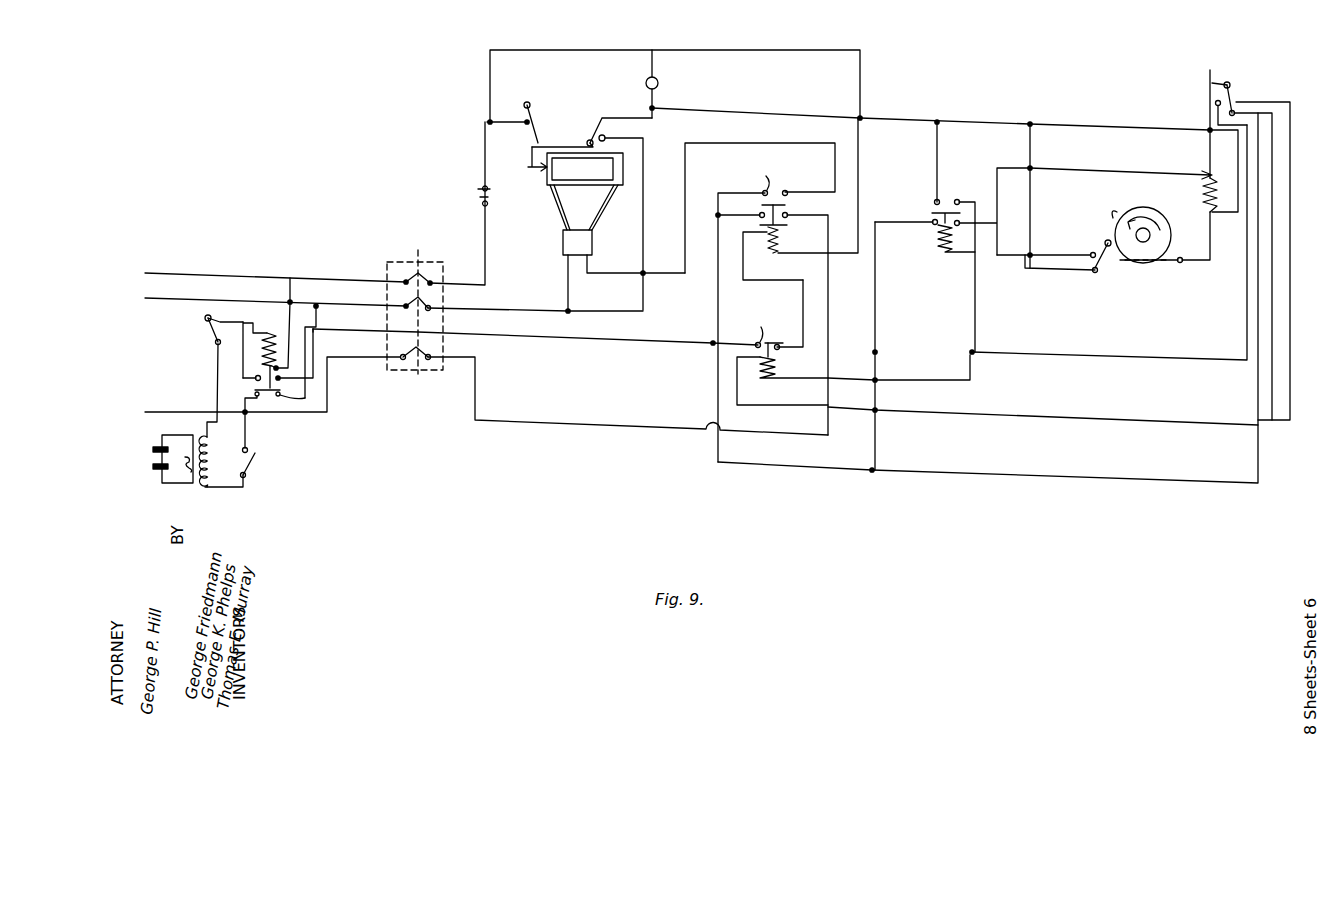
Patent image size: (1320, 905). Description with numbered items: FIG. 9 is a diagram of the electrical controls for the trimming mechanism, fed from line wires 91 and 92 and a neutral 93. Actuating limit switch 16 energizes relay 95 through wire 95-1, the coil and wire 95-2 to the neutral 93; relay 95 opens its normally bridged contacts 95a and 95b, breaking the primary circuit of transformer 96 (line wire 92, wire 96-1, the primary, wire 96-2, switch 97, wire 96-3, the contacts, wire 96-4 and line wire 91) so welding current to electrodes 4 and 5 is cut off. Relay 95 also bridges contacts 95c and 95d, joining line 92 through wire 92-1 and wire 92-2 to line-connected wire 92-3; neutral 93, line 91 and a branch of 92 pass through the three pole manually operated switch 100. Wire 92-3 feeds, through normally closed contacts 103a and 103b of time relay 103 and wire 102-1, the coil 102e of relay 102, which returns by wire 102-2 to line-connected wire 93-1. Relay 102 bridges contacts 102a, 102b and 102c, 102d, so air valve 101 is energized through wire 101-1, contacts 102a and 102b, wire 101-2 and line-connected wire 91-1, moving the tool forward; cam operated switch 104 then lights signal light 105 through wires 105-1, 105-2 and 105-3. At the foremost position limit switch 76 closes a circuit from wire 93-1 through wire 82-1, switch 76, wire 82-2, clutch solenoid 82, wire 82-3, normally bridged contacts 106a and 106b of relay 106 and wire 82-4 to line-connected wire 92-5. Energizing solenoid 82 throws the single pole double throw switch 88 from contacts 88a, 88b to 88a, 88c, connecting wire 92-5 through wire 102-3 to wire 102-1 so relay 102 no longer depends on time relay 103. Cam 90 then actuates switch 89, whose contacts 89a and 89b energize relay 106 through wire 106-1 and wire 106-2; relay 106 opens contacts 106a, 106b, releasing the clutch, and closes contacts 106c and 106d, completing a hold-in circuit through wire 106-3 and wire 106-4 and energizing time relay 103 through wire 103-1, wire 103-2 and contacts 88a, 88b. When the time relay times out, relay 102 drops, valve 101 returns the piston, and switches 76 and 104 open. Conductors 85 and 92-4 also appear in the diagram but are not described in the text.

The electrode 4 is at (152, 466).
The electrode 5 is at (152, 449).
The limit switch 16 is at (205, 318).
The limit switch 76 is at (534, 105).
The clutch solenoid 82 is at (1206, 212).
The wire 82-1 is at (505, 121).
The wire 82-2 is at (904, 121).
The wire 82-3 is at (1105, 174).
The wire 82-4 is at (877, 328).
The conductor 85 is at (1208, 152).
The single pole double throw switch 88 is at (1220, 90).
The contact 88a is at (1236, 111).
The contact 88b is at (1238, 100).
The contact 88c is at (1216, 106).
The switch 89 is at (1105, 255).
The contact 89a is at (1094, 274).
The contact 89b is at (1090, 252).
The cam 90 is at (1120, 210).
The line wire 91 is at (160, 299).
The line connected wire 91-1 is at (566, 290).
The line wire 92 is at (157, 411).
The wire 92-1 is at (217, 345).
The wire 92-2 is at (310, 350).
The line connected wire 92-3 is at (580, 334).
The conductor 92-4 is at (574, 418).
The line-connected wire 92-5 is at (832, 467).
The neutral 93 is at (158, 273).
The line-connected wire 93-1 is at (484, 142).
The relay 95 is at (261, 361).
The wire 95-1 is at (246, 308).
The wire 95-2 is at (294, 282).
The contact 95a is at (259, 398).
The contact 95b is at (290, 400).
The contact 95c is at (256, 380).
The contact 95d is at (300, 383).
The transformer 96 is at (194, 470).
The wire 96-1 is at (216, 425).
The wire 96-2 is at (227, 488).
The wire 96-3 is at (248, 441).
The wire 96-4 is at (318, 318).
The switch 97 is at (255, 462).
The three pole manually operated switch 100 is at (418, 262).
The valve 101 is at (563, 242).
The wire 101-1 is at (718, 312).
The wire 101-2 is at (800, 142).
The relay 102 is at (773, 242).
The wire 102-1 is at (796, 286).
The wire 102-2 is at (860, 163).
The wire 102-3 is at (1125, 356).
The contact 102a is at (762, 178).
The contact 102b is at (787, 189).
The contact 102c is at (760, 215).
The contact 102d is at (788, 216).
The coil 102e is at (779, 238).
The time relay 103 is at (782, 374).
The wire 103-1 is at (962, 368).
The wire 103-2 is at (955, 414).
The contact 103a is at (760, 334).
The contact 103b is at (780, 349).
The switch 104 is at (640, 219).
The signal light 105 is at (659, 83).
The wire 105-1 is at (645, 272).
The wire 105-2 is at (628, 118).
The wire 105-3 is at (652, 50).
The relay 106 is at (951, 245).
The wire 106-1 is at (1010, 260).
The wire 106-2 is at (1031, 149).
The wire 106-3 is at (938, 141).
The wire 106-4 is at (1000, 210).
The contact 106a is at (933, 225).
The contact 106b is at (960, 226).
The contact 106c is at (934, 199).
The contact 106d is at (958, 199).